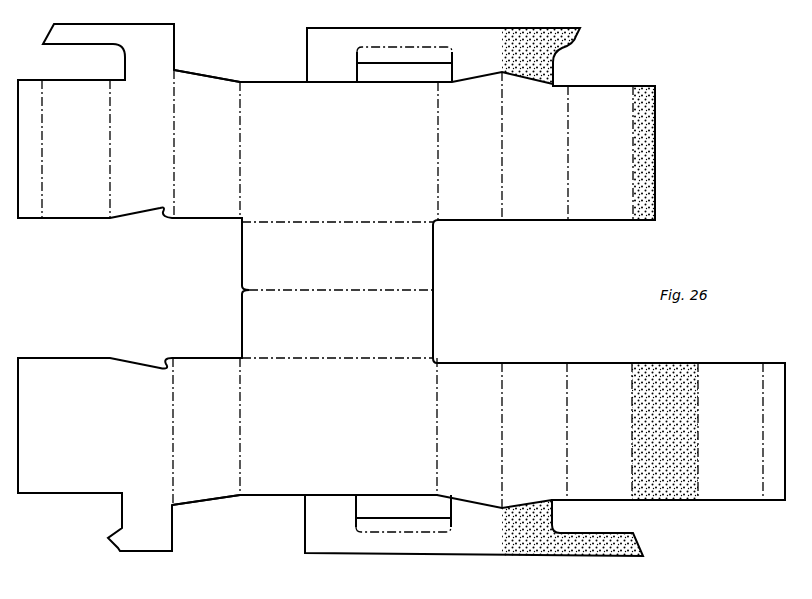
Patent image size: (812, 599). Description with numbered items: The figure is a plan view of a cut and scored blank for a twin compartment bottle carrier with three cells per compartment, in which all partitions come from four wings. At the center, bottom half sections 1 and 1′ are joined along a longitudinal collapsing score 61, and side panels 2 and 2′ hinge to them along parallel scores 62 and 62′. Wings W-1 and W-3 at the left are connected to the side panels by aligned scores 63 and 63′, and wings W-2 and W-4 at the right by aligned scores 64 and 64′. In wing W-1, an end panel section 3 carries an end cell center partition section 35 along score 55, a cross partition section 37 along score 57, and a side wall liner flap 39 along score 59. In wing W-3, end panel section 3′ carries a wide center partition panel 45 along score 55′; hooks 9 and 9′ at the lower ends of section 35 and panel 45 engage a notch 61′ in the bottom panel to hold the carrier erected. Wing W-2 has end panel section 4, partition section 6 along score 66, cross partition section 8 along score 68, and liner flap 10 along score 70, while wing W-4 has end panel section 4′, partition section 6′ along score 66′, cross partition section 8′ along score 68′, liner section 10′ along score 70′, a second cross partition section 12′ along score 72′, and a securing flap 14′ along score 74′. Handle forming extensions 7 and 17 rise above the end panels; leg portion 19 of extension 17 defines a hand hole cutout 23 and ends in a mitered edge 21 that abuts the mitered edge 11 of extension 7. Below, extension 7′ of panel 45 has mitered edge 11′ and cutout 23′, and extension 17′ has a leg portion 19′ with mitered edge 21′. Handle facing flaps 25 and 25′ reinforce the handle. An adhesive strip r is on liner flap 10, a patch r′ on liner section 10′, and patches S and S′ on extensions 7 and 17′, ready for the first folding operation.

The bottom half section 1 is at (343, 261).
The bottom half section 1′ is at (343, 328).
The side panel 2 is at (342, 158).
The side panel 2′ is at (339, 428).
The end panel section 3 is at (206, 126).
The end panel section 3′ is at (209, 418).
The end panel section 4 is at (471, 158).
The end panel section 4′ is at (472, 428).
The end cell center partition section 6 is at (537, 138).
The end cell center partition section 6′ is at (537, 423).
The handle forming extension 7 is at (538, 30).
The handle forming extension 7′ is at (150, 537).
The cross partition section 8 is at (599, 138).
The cross partition section 8′ is at (599, 423).
The hook portion 9 is at (163, 216).
The hook portion 9′ is at (165, 355).
The side wall liner flap 10 is at (650, 111).
The side wall liner section 10′ is at (661, 379).
The mitered edge 11 is at (580, 36).
The mitered edge 11′ is at (108, 543).
The second cross partition section 12′ is at (738, 436).
The center partition securing flap 14′ is at (774, 491).
The handle forming extension 17 is at (150, 36).
The handle forming extension 17′ is at (528, 551).
The leg portion 19 is at (80, 31).
The leg portion 19′ is at (601, 551).
The mitered edge 21 is at (51, 33).
The mitered edge 21′ is at (645, 551).
The hand hole cutout 23 is at (80, 62).
The hand hole cutout 23′ is at (118, 511).
The handle facing flap 25 is at (333, 41).
The handle facing flap 25′ is at (330, 541).
The end cell center partition section 35 is at (146, 153).
The cross partition section 37 is at (84, 133).
The side wall liner flap 39 is at (31, 212).
The center partition panel 45 is at (97, 429).
The transverse score 55 is at (177, 174).
The transverse score 55′ is at (176, 450).
The transverse score 57 is at (112, 118).
The transverse score 59 is at (44, 167).
The longitudinally collapsing score 61 is at (385, 291).
The notch 61′ is at (243, 290).
The score 62 is at (300, 223).
The score 62′ is at (303, 361).
The score 63 is at (243, 161).
The score 63′ is at (243, 441).
The score 64 is at (437, 184).
The score 64′ is at (437, 446).
The transverse score 66 is at (502, 193).
The transverse score 66′ is at (502, 379).
The transverse score 68 is at (568, 203).
The transverse score 68′ is at (567, 386).
The transverse score 70 is at (633, 178).
The transverse score 70′ is at (632, 386).
The transverse score 72′ is at (700, 388).
The transverse score 74′ is at (762, 456).
The patch of adhesive S is at (541, 56).
The patch of adhesive S′ is at (572, 528).
The adhesive strip r is at (644, 153).
The patch of adhesive r′ is at (665, 431).
The top wing W-1 is at (86, 229).
The top wing W-2 is at (667, 167).
The bottom wing W-3 is at (90, 345).
The bottom wing W-4 is at (760, 341).